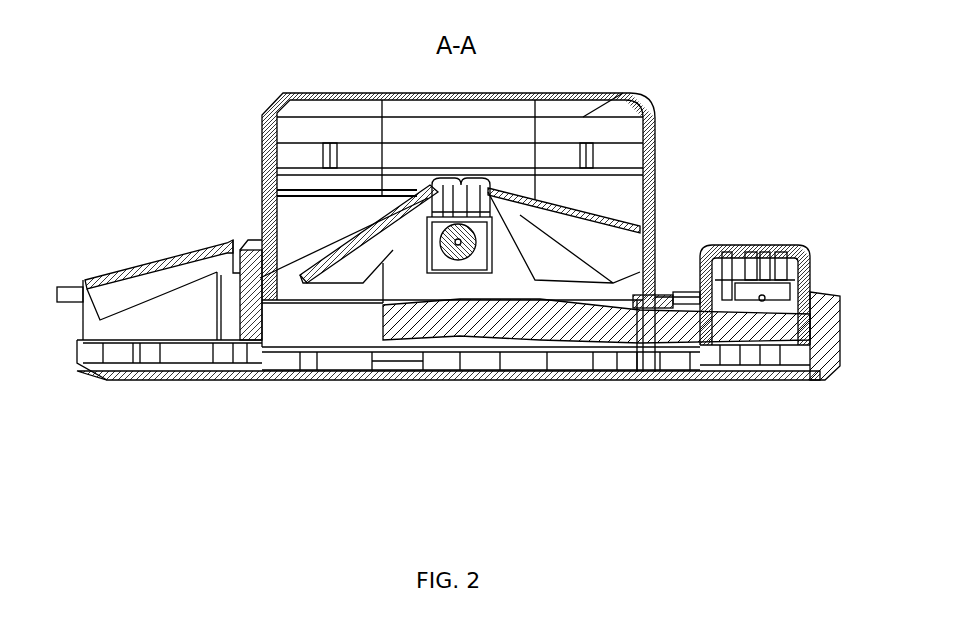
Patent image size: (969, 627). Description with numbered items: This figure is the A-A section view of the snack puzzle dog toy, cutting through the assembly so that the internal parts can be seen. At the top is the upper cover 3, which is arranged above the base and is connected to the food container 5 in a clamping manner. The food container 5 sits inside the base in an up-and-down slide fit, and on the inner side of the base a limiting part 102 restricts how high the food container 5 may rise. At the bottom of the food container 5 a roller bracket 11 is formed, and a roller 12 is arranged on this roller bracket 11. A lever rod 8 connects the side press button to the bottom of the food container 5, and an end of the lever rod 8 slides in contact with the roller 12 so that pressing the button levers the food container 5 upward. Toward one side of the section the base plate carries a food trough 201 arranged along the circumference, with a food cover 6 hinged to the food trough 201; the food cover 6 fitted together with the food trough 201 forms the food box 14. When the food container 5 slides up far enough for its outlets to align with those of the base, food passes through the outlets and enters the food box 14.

The upper cover 3 is at (602, 96).
The limiting part 102 is at (262, 172).
The roller 12 is at (383, 263).
The roller bracket 11 is at (478, 237).
The food container 5 is at (655, 232).
The lever rod 8 is at (610, 317).
The food trough 201 is at (128, 320).
The food cover 6 is at (120, 285).
The food box 14 is at (308, 455).